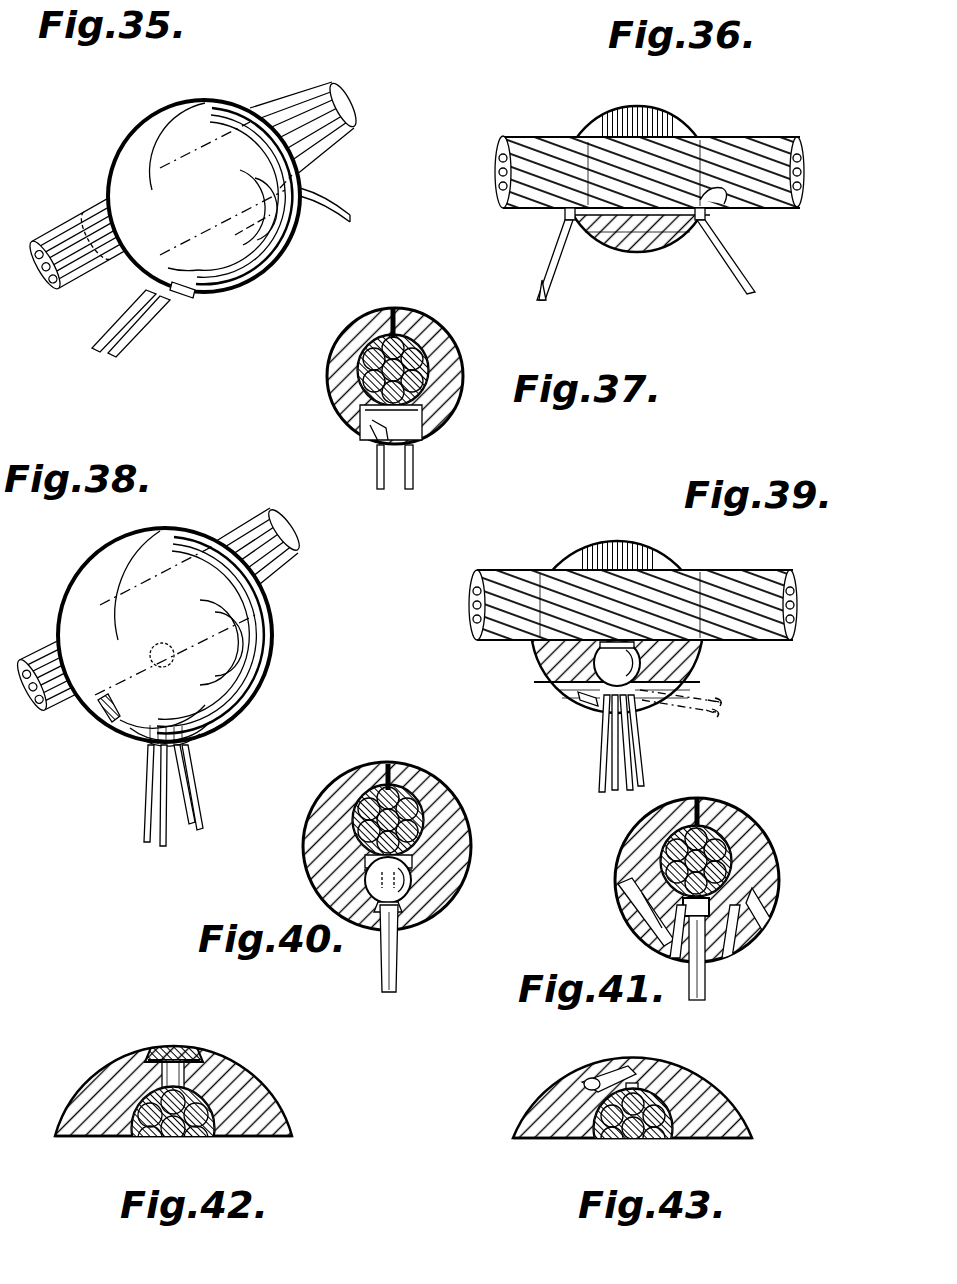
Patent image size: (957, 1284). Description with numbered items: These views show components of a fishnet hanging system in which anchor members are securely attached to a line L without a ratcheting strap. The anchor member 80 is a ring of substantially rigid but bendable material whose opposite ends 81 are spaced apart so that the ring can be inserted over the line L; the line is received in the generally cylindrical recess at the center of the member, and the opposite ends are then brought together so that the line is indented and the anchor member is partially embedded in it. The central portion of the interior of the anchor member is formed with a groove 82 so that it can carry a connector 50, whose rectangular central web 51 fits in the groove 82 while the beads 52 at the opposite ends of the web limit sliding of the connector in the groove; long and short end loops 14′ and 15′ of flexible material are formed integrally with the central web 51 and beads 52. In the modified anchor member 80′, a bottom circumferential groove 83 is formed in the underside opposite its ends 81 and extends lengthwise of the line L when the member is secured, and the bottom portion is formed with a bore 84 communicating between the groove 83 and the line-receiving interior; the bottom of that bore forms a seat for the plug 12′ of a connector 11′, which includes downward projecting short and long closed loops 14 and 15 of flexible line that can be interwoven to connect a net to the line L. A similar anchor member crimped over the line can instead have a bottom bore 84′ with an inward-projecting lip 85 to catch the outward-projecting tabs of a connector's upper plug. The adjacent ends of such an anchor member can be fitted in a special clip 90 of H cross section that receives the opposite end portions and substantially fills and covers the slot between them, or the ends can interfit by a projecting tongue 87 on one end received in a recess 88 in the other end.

In FIG. 35, the line L is at (315, 95).
In FIG. 36, the line L is at (770, 140).
In FIG. 37, the line L is at (420, 313).
In FIG. 38, the line L is at (265, 522).
In FIG. 39, the line L is at (762, 576).
In FIG. 40, the line L is at (420, 804).
In FIG. 41, the line L is at (640, 858).
In FIG. 42, the line L is at (136, 1138).
In FIG. 43, the line L is at (600, 1140).
In FIG. 35, the anchor member 80 is at (138, 138).
In FIG. 36, the anchor member 80 is at (618, 242).
In FIG. 37, the anchor member 80 is at (450, 412).
In FIG. 38, the anchor member 80′ is at (270, 672).
In FIG. 39, the anchor member 80′ is at (532, 664).
In FIG. 40, the anchor member 80′ is at (460, 852).
In FIG. 35, the opposite ends 81 is at (212, 104).
In FIG. 36, the opposite ends 81 is at (655, 112).
In FIG. 37, the opposite ends 81 is at (395, 308).
In FIG. 38, the opposite ends 81 is at (172, 534).
In FIG. 39, the opposite ends 81 is at (592, 556).
In FIG. 40, the opposite ends 81 is at (388, 764).
In FIG. 36, the groove 82 is at (725, 205).
In FIG. 37, the groove 82 is at (362, 440).
In FIG. 38, the bottom circumferential groove 83 is at (102, 724).
In FIG. 39, the bottom circumferential groove 83 is at (576, 703).
In FIG. 40, the bottom circumferential groove 83 is at (402, 922).
In FIG. 39, the bore 84 is at (700, 652).
In FIG. 40, the bore 84 is at (436, 884).
In FIG. 41, the bottom bore 84′ is at (740, 900).
In FIG. 41, the inward-projecting lip 85 is at (640, 942).
In FIG. 43, the projecting tongue 87 is at (606, 1070).
In FIG. 43, the recess 88 is at (580, 1082).
In FIG. 42, the clip 90 is at (176, 1048).
In FIG. 35, the connector 50 is at (160, 300).
In FIG. 36, the connector 50 is at (548, 220).
In FIG. 37, the connector 50 is at (418, 466).
In FIG. 35, the rectangular central web 51 is at (240, 285).
In FIG. 36, the rectangular central web 51 is at (648, 246).
In FIG. 37, the rectangular central web 51 is at (358, 408).
In FIG. 35, the beads 52 is at (182, 298).
In FIG. 36, the beads 52 is at (575, 224).
In FIG. 38, the connector 11′ is at (140, 780).
In FIG. 39, the connector 11′ is at (590, 720).
In FIG. 40, the connector 11′ is at (374, 952).
In FIG. 38, the plug 12′ is at (218, 738).
In FIG. 39, the plug 12′ is at (650, 702).
In FIG. 40, the plug 12′ is at (364, 872).
In FIG. 38, the short closed loop 14 is at (196, 812).
In FIG. 39, the short closed loop 14 is at (636, 770).
In FIG. 35, the long end loop 14′ is at (335, 188).
In FIG. 36, the long end loop 14′ is at (752, 272).
In FIG. 38, the long closed loop 15 is at (148, 838).
In FIG. 39, the long closed loop 15 is at (600, 788).
In FIG. 35, the short end loop 15′ is at (90, 340).
In FIG. 36, the short end loop 15′ is at (542, 278).